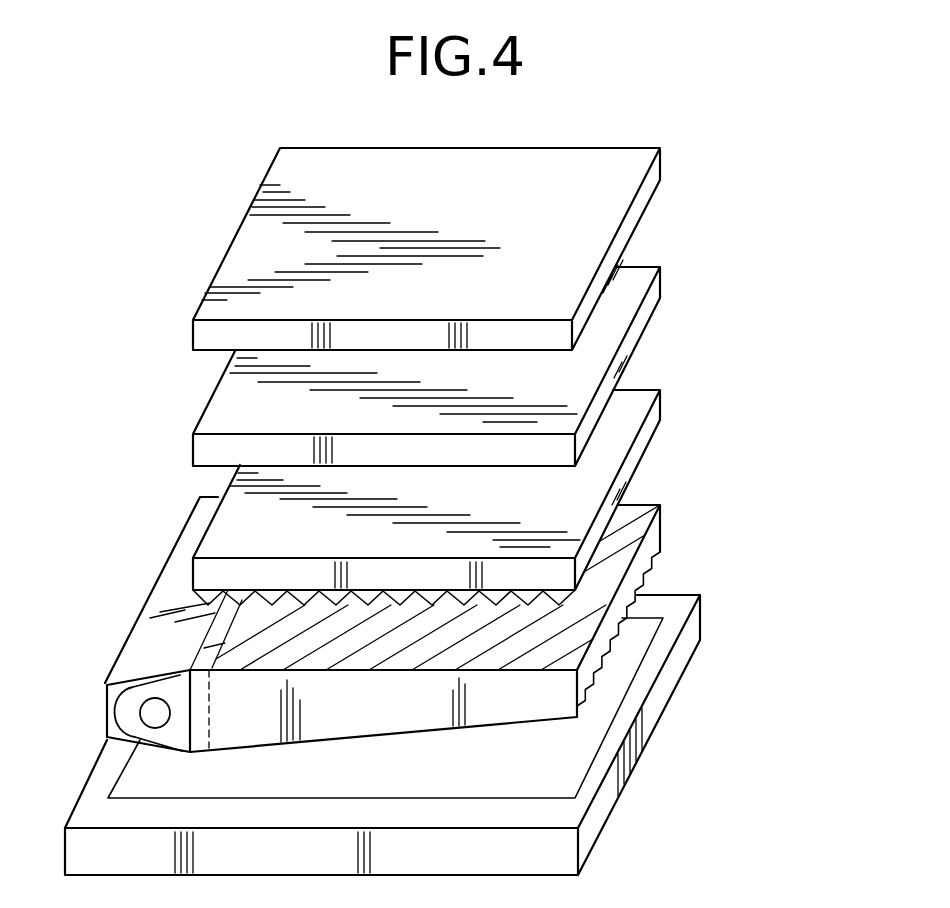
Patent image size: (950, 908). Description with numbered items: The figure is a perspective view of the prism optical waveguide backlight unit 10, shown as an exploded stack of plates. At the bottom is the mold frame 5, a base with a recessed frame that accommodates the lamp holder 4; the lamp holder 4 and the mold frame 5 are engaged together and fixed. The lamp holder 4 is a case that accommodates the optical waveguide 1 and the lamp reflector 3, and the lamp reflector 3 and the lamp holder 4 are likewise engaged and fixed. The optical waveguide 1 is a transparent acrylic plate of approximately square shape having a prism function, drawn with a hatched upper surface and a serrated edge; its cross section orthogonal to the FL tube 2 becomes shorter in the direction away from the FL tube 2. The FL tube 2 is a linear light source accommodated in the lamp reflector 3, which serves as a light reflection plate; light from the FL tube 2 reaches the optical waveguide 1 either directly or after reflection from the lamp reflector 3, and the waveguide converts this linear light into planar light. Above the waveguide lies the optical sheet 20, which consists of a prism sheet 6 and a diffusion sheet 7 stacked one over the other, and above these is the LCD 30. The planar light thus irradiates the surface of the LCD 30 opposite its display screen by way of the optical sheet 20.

The backlight unit 10 is at (788, 295).
The LCD 30 is at (663, 163).
The optical sheet 20 is at (698, 300).
The diffusion sheet 7 is at (215, 393).
The prism sheet 6 is at (230, 485).
The optical waveguide 1 is at (642, 500).
The FL tube 2 is at (157, 698).
The lamp reflector 3 is at (145, 677).
The lamp holder 4 is at (106, 686).
The mold frame 5 is at (670, 700).